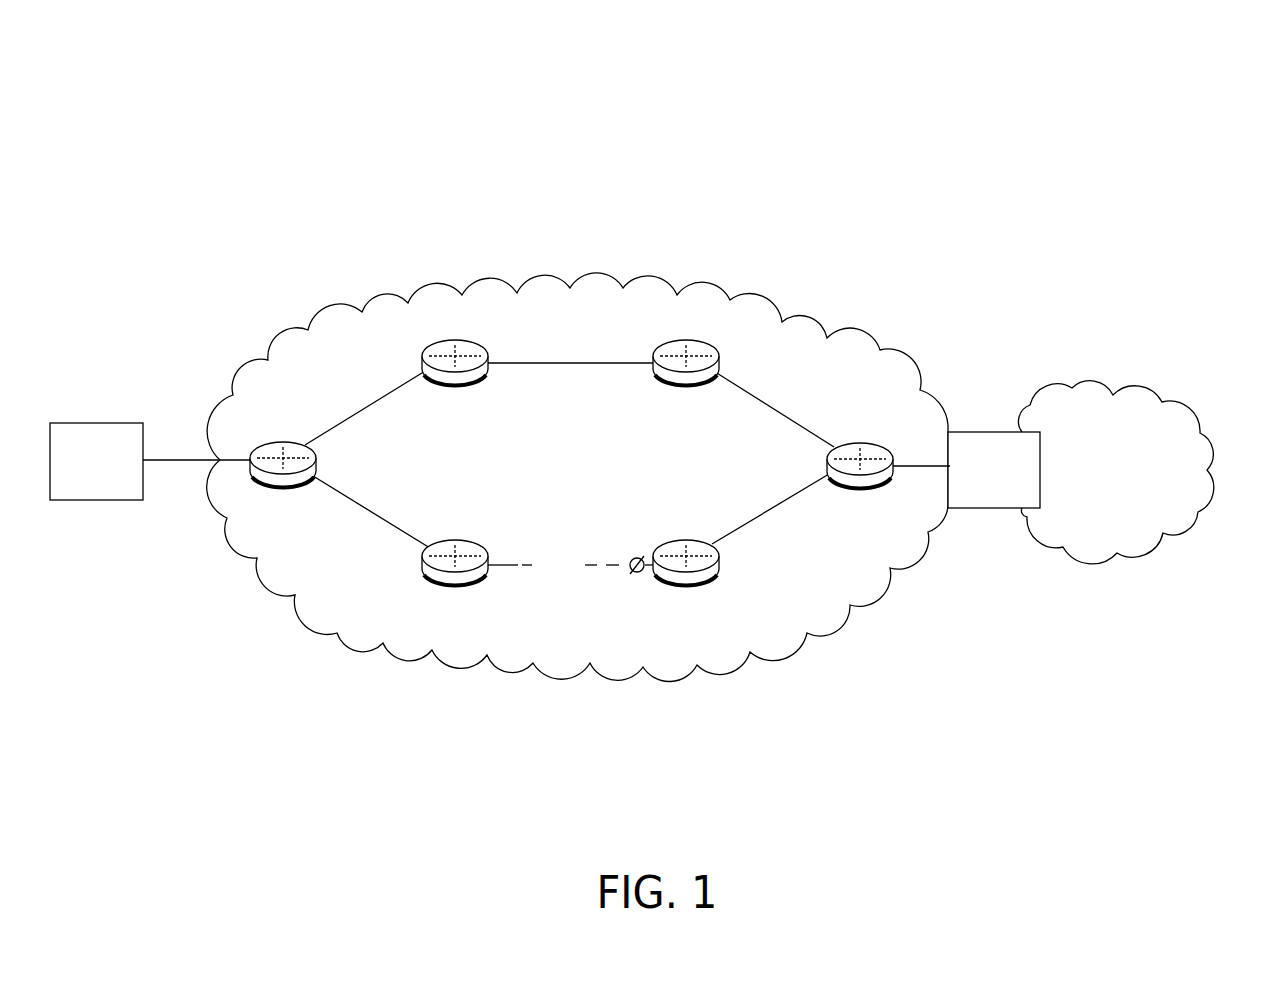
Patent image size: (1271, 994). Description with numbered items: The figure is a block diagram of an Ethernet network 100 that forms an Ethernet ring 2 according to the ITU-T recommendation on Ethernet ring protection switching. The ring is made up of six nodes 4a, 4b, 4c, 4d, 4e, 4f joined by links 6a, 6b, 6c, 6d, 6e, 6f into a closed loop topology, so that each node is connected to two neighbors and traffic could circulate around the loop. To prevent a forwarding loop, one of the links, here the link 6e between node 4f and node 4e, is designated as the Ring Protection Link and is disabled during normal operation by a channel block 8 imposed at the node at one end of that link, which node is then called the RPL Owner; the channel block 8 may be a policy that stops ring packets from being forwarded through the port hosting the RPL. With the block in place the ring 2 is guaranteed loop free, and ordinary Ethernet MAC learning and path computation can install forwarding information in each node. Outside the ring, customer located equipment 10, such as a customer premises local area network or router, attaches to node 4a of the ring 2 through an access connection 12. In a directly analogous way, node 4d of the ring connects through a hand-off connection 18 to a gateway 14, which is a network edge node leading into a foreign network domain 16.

The Ethernet network 100 is at (1215, 58).
The Ethernet ring 2 is at (387, 384).
The node 4a is at (283, 479).
The node 4b is at (455, 378).
The node 4c is at (686, 380).
The node 4d is at (860, 482).
The node 4e is at (686, 580).
The node 4f is at (455, 578).
The link 6a is at (363, 407).
The link 6b is at (559, 363).
The link 6c is at (776, 409).
The link 6d is at (778, 513).
The link (Ring Protection Link) 6e is at (570, 587).
The link 6f is at (364, 508).
The channel block 8 is at (634, 582).
The customer located equipment (CLE) 10 is at (85, 489).
The access connection 12 is at (181, 461).
The gateway (GW) 14 is at (982, 497).
The foreign network domain 16 is at (1106, 511).
The hand-off connection 18 is at (904, 466).